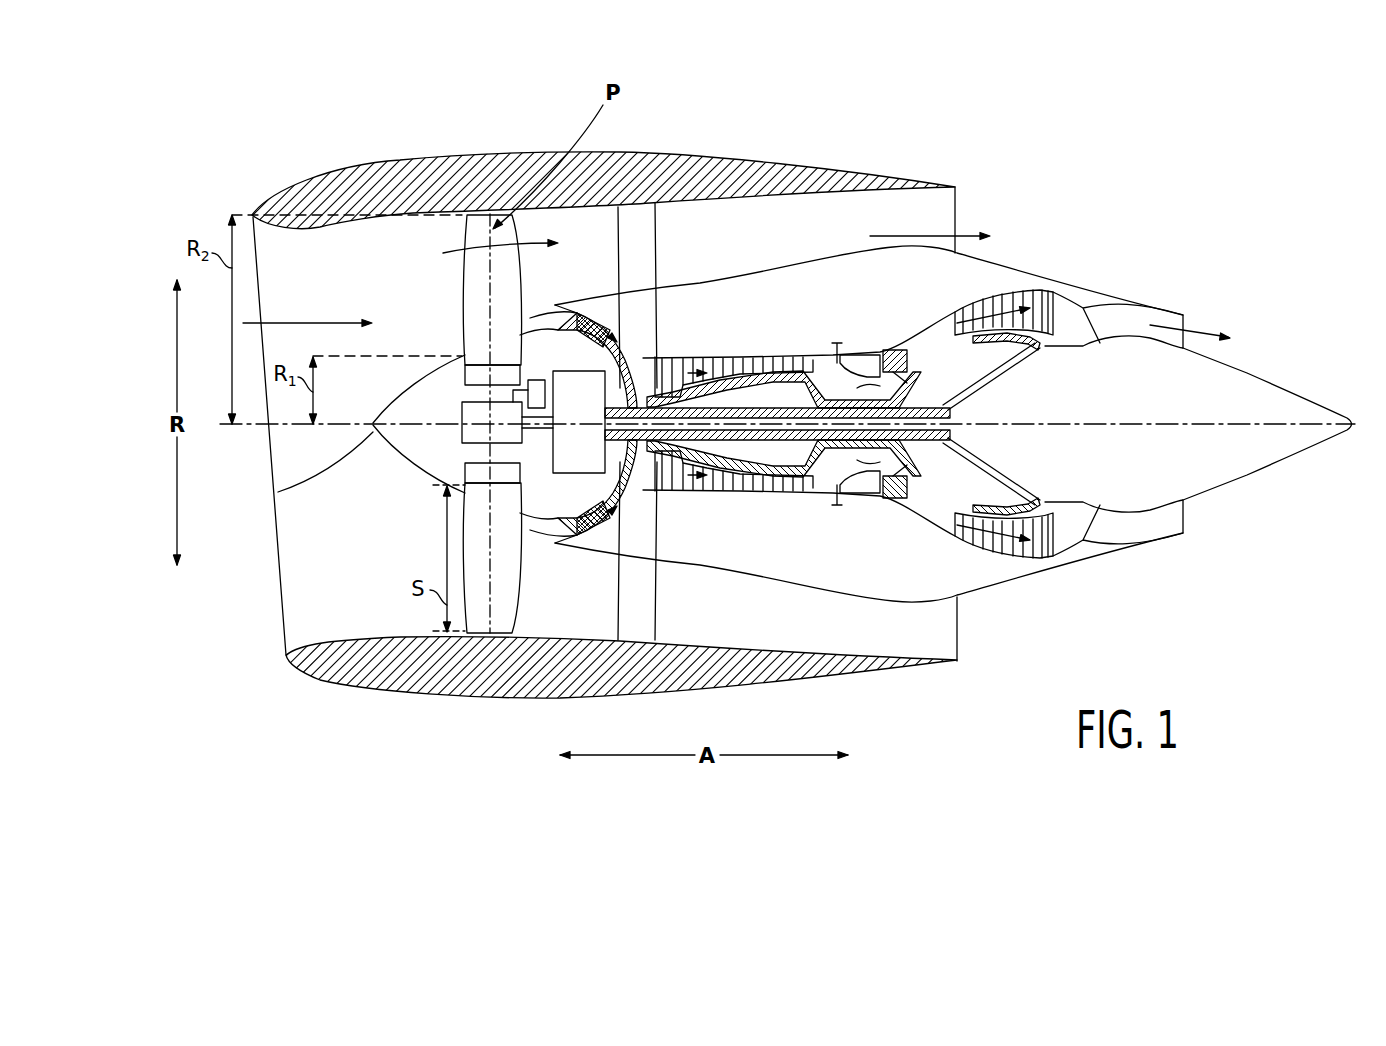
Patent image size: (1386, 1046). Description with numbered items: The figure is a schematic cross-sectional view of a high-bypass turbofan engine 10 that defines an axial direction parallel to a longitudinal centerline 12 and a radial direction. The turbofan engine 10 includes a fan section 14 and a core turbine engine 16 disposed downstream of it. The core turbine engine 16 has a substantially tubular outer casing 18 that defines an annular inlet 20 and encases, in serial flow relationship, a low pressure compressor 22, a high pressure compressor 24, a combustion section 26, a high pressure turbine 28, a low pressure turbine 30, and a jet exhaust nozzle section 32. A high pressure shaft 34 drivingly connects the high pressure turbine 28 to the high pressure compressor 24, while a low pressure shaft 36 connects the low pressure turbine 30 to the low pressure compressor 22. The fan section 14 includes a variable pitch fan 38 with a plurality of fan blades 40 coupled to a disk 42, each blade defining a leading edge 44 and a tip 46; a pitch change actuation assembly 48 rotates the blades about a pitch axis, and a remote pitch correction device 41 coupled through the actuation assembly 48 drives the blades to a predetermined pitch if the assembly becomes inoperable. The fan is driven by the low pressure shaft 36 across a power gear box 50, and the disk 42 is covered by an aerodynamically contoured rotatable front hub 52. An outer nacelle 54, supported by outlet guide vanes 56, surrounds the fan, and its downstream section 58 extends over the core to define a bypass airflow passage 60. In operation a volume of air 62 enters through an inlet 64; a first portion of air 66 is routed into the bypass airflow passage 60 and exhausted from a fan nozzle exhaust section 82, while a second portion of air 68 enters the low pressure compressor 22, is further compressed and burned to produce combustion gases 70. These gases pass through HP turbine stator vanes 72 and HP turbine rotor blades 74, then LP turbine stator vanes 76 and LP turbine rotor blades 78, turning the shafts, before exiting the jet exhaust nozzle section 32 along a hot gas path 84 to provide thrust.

The turbofan engine 10 is at (1098, 168).
The longitudinal centerline 12 is at (1122, 420).
The fan section 14 is at (423, 240).
The core turbine engine 16 is at (775, 307).
The outer casing 18 is at (810, 587).
The annular inlet 20 is at (556, 532).
The low pressure compressor 22 is at (612, 480).
The high pressure compressor 24 is at (683, 477).
The combustion section 26 is at (855, 483).
The high pressure turbine 28 is at (993, 477).
The low pressure turbine 30 is at (1040, 548).
The jet exhaust nozzle section 32 is at (1100, 533).
The high pressure shaft 34 is at (885, 380).
The low pressure shaft 36 is at (993, 382).
The variable pitch fan 38 is at (427, 480).
The fan blades 40 is at (462, 573).
The pitch correction device 41 is at (532, 380).
The disk 42 is at (465, 375).
The leading edge 44 is at (463, 332).
The tip 46 is at (482, 210).
The pitch change actuation assembly 48 is at (465, 407).
The power gear box 50 is at (583, 398).
The rotatable front hub 52 is at (278, 492).
The outer nacelle 54 is at (515, 700).
The outlet guide vanes 56 is at (657, 233).
The downstream section 58 is at (900, 177).
The bypass airflow passage 60 is at (802, 237).
The volume of air 62 is at (305, 320).
The inlet 64 is at (283, 633).
The first portion of air 66 is at (483, 248).
The second portion of air 68 is at (548, 313).
The combustion gases 70 is at (1000, 298).
The HP turbine stator vanes 72 is at (960, 458).
The HP turbine rotor blades 74 is at (900, 498).
The LP turbine stator vanes 76 is at (960, 540).
The LP turbine rotor blades 78 is at (967, 540).
The fan nozzle exhaust section 82 is at (945, 210).
The hot gas path 84 is at (940, 330).